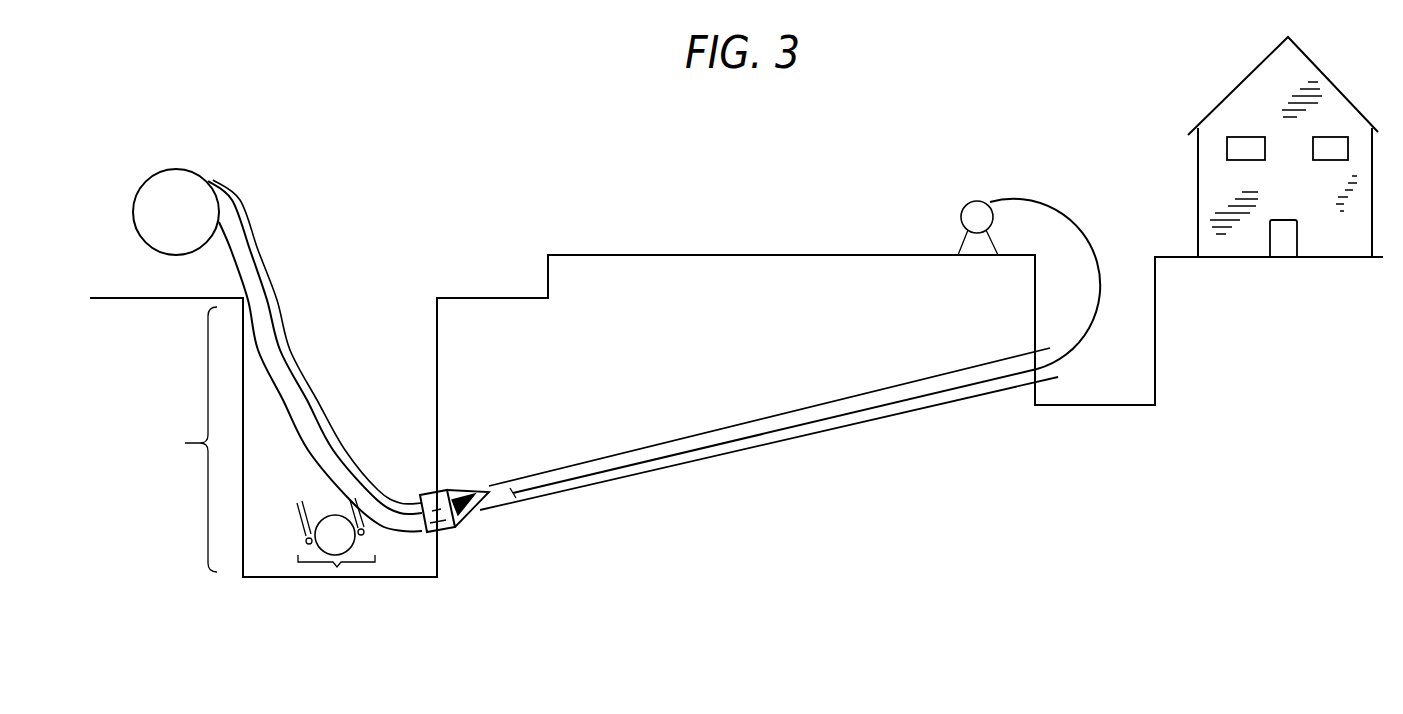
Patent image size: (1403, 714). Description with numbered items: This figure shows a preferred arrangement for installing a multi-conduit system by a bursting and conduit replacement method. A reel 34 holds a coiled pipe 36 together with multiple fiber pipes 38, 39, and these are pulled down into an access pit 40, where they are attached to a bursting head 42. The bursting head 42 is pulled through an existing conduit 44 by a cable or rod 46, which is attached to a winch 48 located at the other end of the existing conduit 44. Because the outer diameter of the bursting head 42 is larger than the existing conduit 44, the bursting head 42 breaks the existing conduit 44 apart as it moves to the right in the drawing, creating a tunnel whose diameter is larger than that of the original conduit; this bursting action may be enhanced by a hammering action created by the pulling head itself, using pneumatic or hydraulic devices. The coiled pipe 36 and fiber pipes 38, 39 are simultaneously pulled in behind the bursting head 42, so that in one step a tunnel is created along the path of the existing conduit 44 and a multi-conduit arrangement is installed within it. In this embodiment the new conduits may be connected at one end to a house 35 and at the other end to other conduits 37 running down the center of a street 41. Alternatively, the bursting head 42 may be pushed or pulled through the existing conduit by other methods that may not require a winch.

The reel 34 is at (153, 249).
The house 35 is at (1218, 198).
The coiled pipe 36 is at (302, 405).
The other conduits 37 is at (338, 568).
The fiber pipe 38 is at (312, 455).
The fiber pipe 39 is at (348, 452).
The access pit 40 is at (172, 439).
The street 41 is at (407, 269).
The bursting head 42 is at (447, 490).
The existing conduit 44 is at (789, 417).
The cable or rod 46 is at (515, 495).
The winch 48 is at (980, 203).